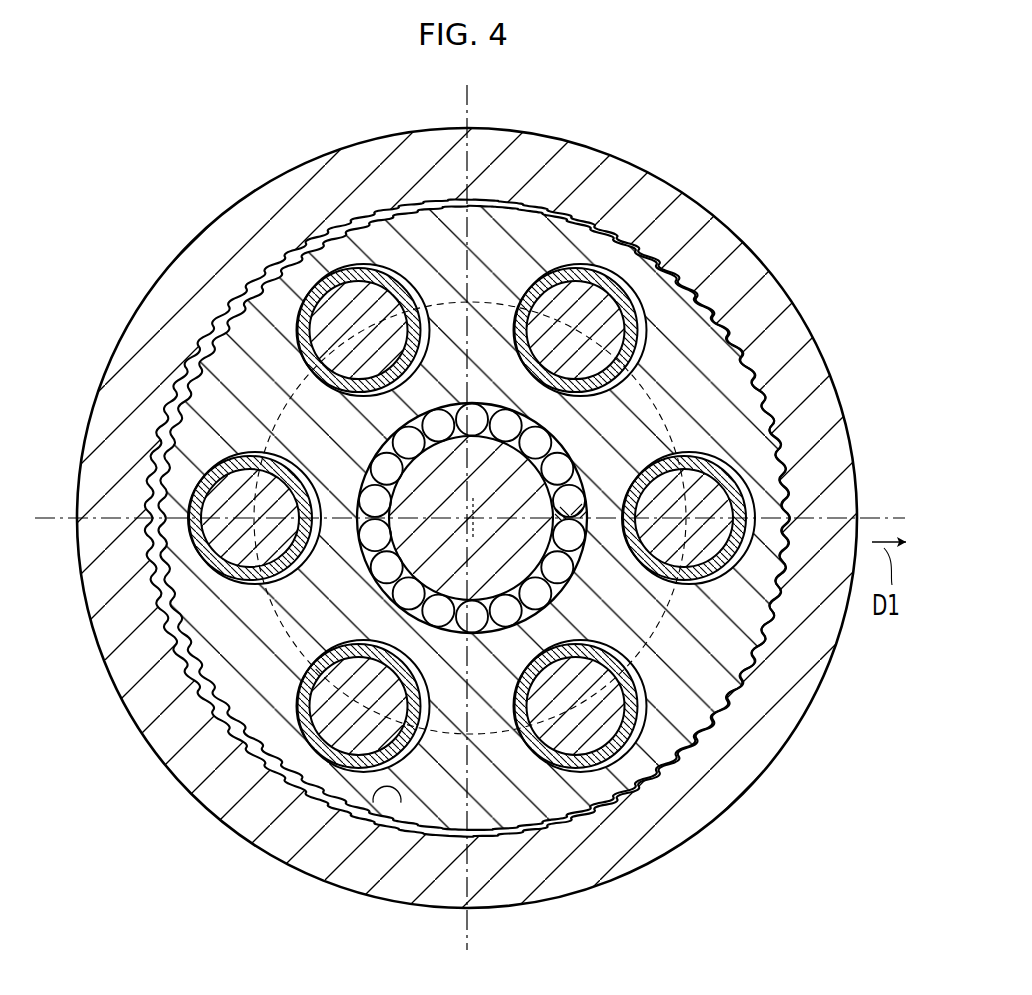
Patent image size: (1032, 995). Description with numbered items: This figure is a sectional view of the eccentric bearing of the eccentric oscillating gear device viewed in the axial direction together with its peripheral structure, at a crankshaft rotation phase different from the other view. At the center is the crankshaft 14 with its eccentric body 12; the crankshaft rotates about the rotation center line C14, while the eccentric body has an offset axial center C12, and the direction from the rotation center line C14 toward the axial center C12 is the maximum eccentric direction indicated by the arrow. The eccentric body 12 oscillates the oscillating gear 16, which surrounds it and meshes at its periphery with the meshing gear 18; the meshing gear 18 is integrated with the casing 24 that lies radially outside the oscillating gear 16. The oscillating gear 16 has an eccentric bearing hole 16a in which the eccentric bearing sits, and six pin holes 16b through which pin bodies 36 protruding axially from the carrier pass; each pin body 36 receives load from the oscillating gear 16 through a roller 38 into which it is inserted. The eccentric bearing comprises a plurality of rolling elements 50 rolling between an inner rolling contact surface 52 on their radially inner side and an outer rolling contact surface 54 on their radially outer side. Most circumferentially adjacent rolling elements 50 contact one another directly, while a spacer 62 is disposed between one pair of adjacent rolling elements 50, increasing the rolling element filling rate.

The eccentric body 12 is at (419, 838).
The crankshaft 14 is at (236, 716).
The oscillating gear 16 is at (690, 682).
The eccentric bearing hole 16a is at (583, 395).
The pin hole 16b is at (652, 347).
The meshing gear 18 is at (372, 800).
The casing 24 is at (247, 815).
The pin body 36 is at (640, 268).
The roller 38 is at (575, 260).
The rolling element 50 is at (572, 580).
The inner rolling contact surface 52 is at (412, 470).
The outer rolling contact surface 54 is at (397, 472).
The spacer 62 is at (578, 512).
The axial center of the eccentric body C12 is at (467, 519).
The rotation center line of the crankshaft C14 is at (473, 519).